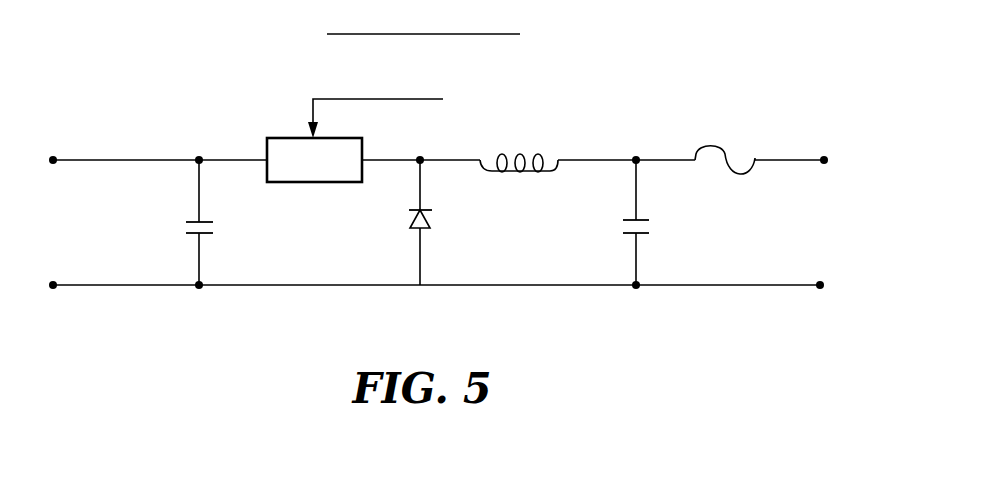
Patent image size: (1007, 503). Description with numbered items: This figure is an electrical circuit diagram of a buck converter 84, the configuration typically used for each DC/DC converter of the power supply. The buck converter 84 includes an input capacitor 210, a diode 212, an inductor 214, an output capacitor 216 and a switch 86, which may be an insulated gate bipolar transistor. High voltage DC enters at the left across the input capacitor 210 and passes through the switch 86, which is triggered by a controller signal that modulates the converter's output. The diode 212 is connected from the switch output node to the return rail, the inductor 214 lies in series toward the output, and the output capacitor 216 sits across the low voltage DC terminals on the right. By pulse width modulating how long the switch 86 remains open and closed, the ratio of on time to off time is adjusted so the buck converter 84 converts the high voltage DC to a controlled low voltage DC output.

The buck converter 84 is at (600, 100).
The switch 86 is at (288, 138).
The input capacitor 210 is at (216, 228).
The diode 212 is at (409, 217).
The inductor 214 is at (532, 172).
The output capacitor 216 is at (620, 223).